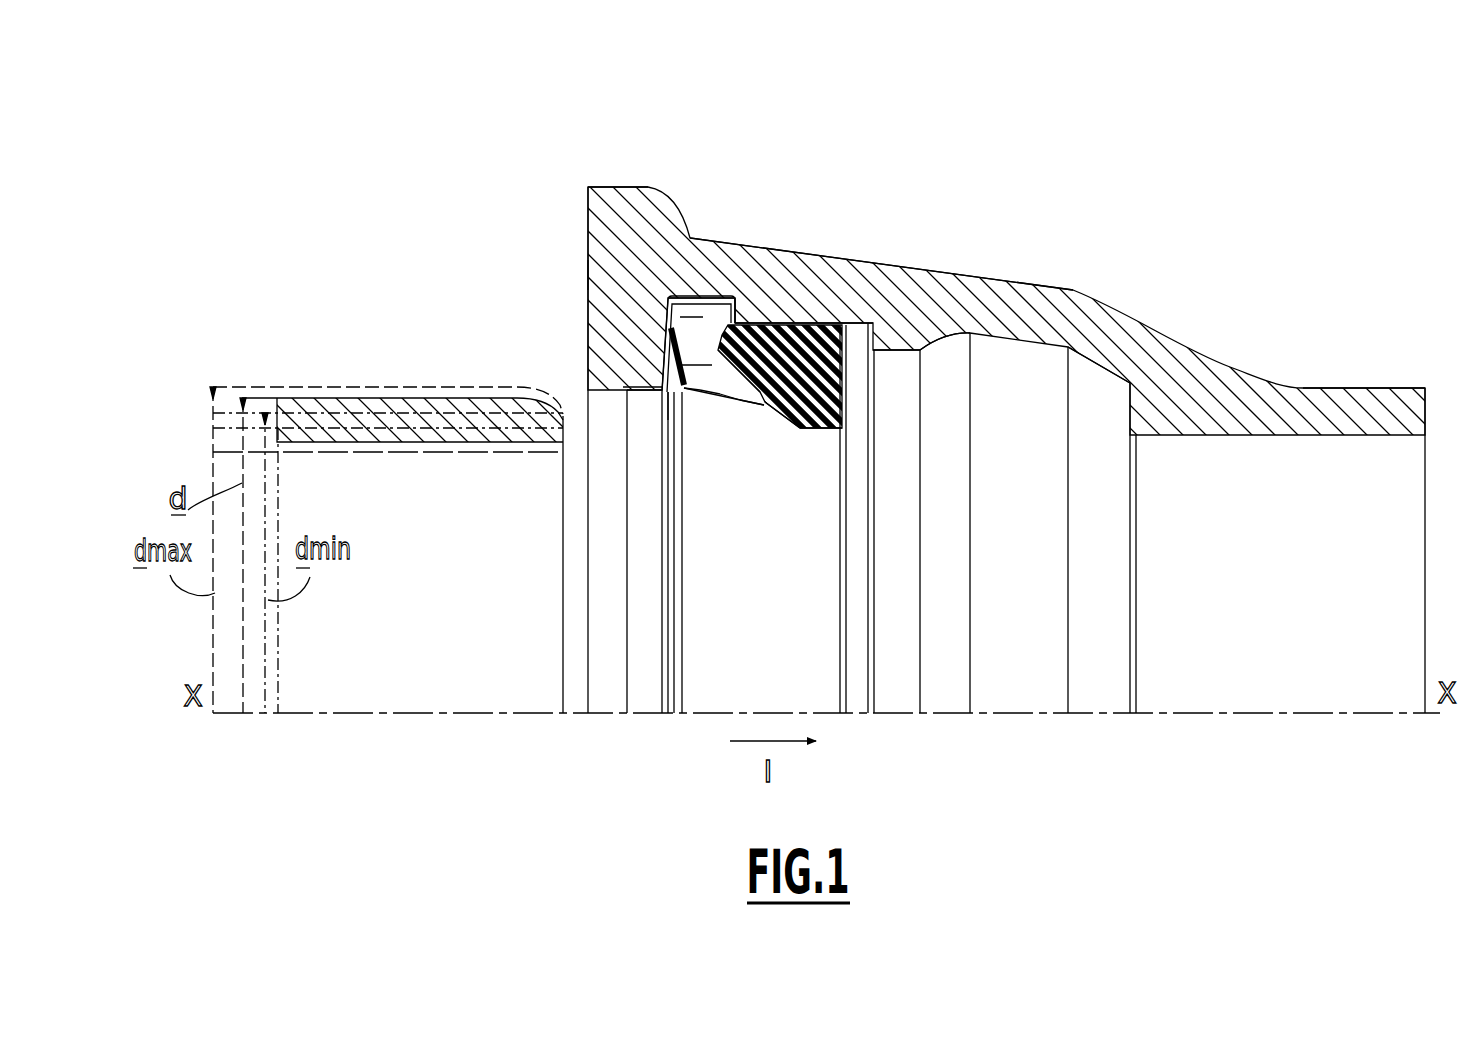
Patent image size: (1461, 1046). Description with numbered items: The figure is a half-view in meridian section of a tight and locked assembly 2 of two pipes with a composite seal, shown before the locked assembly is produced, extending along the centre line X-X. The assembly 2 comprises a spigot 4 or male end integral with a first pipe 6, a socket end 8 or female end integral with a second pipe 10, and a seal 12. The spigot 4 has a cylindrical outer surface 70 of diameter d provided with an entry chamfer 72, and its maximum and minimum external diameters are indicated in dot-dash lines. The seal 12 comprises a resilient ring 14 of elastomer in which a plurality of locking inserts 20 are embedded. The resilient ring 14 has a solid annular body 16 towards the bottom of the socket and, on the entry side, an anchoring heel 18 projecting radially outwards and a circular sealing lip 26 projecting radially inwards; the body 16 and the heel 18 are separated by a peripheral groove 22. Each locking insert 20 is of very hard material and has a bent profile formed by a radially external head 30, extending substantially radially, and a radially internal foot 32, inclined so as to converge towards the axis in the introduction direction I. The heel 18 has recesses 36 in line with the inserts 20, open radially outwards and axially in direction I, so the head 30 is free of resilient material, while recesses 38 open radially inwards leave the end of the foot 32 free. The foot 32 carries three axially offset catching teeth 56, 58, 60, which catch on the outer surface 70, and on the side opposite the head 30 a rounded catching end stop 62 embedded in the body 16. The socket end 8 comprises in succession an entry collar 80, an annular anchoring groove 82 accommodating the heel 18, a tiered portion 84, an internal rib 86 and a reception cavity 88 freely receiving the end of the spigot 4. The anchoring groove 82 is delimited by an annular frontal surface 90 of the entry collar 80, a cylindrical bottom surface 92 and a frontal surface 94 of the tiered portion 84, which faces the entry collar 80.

The tight and locked assembly 2 is at (961, 146).
The spigot 4 is at (477, 398).
The first pipe 6 is at (250, 340).
The socket end 8 is at (952, 276).
The second pipe 10 is at (1354, 353).
The seal 12 is at (855, 434).
The resilient ring 14 is at (809, 442).
The solid annular body 16 is at (842, 408).
The anchoring heel 18 is at (690, 294).
The locking insert 20 is at (698, 344).
The peripheral groove 22 is at (812, 320).
The circular sealing lip 26 is at (678, 398).
The head 30 is at (650, 278).
The foot 32 is at (787, 417).
The recess 36 is at (740, 300).
The recess 38 is at (708, 415).
The catching tooth 56 is at (723, 402).
The catching tooth 58 is at (735, 405).
The catching tooth 60 is at (753, 410).
The catching end stop 62 is at (812, 393).
The cylindrical outer surface 70 is at (372, 385).
The entry chamfer 72 is at (538, 385).
The entry collar 80 is at (603, 243).
The annular anchoring groove 82 is at (698, 293).
The tiered portion 84 is at (895, 336).
The internal rib 86 is at (948, 297).
The reception cavity 88 is at (1077, 403).
The annular frontal surface 90 is at (662, 382).
The cylindrical bottom surface 92 is at (723, 293).
The frontal surface 94 is at (770, 312).